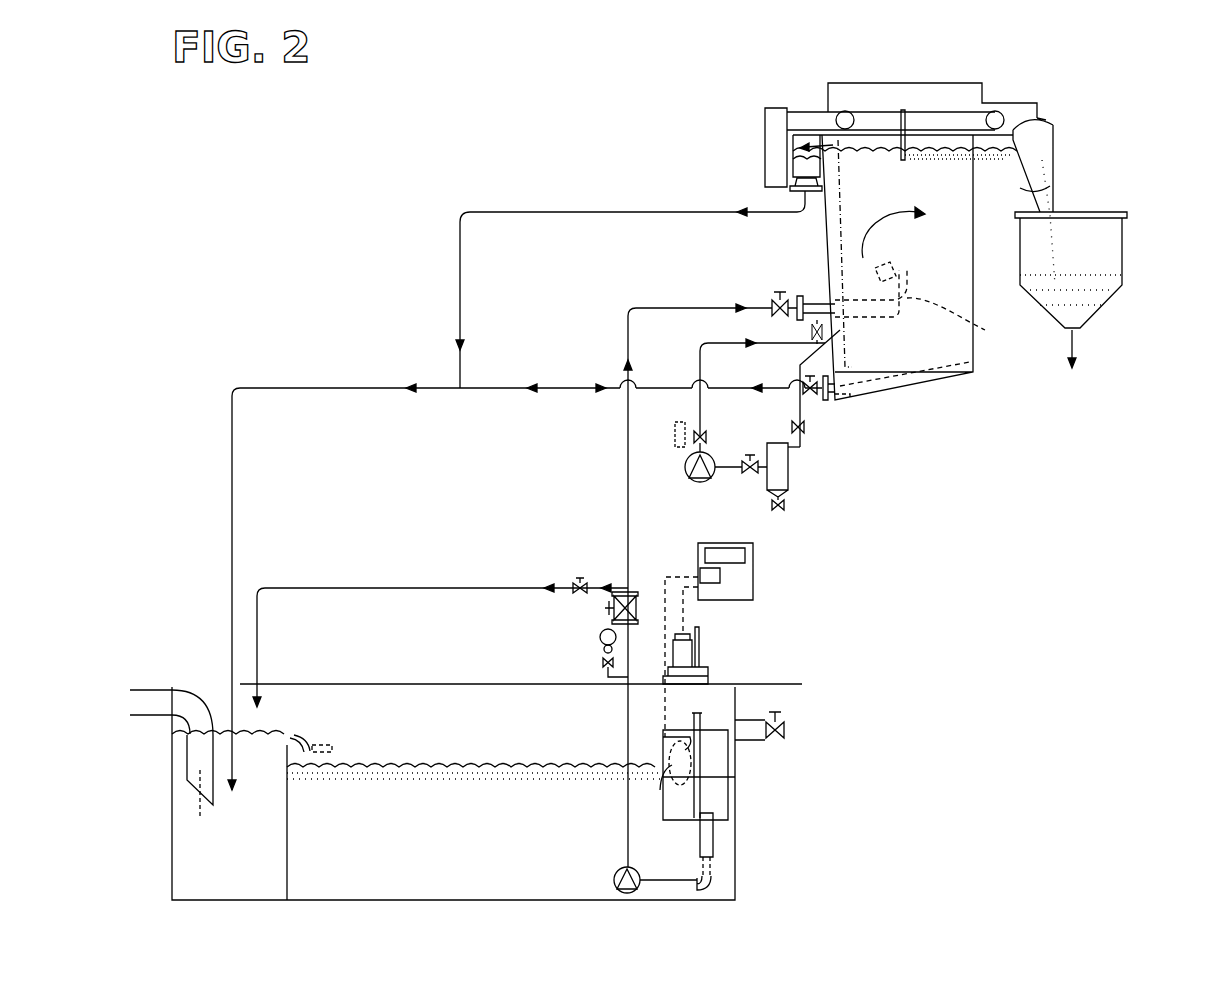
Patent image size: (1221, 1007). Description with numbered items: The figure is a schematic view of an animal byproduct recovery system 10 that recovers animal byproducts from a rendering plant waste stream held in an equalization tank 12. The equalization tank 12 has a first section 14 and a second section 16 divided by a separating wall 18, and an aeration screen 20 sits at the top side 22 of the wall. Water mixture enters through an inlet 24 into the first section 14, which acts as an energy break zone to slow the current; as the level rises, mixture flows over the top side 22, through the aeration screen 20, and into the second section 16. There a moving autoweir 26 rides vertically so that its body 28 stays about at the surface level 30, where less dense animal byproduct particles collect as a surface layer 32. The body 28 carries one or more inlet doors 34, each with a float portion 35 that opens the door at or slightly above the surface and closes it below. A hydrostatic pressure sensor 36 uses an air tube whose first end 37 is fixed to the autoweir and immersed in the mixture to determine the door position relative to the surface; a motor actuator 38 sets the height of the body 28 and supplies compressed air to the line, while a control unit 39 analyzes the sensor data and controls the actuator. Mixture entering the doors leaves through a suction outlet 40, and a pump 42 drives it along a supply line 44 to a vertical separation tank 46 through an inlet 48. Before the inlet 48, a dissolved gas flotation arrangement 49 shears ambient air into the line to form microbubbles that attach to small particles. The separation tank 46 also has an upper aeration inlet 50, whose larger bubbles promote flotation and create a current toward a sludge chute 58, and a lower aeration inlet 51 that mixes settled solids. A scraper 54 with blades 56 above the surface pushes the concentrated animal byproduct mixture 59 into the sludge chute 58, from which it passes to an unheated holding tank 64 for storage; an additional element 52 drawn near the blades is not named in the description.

The animal byproduct recovery system 10 is at (1044, 654).
The equalization tank 12 is at (722, 902).
The first section 14 is at (257, 820).
The second section 16 is at (364, 837).
The separating wall 18 is at (289, 843).
The aeration screen 20 is at (327, 746).
The top side of the separation wall 22 is at (283, 732).
The inlet 24 is at (147, 716).
The moving autoweir 26 is at (728, 795).
The body 28 is at (740, 777).
The surface level 30 is at (555, 762).
The surface layer 32 is at (433, 765).
The inlet doors 34 is at (705, 750).
The float portion 35 is at (681, 772).
The hydrostatic pressure sensor 36 is at (708, 585).
The first end of the air tube 37 is at (660, 786).
The motor actuator 38 is at (714, 655).
The control unit 39 is at (755, 575).
The suction outlet 40 is at (713, 815).
The pump 42 is at (637, 893).
The supply line 44 is at (627, 480).
The vertical separation tank 46 is at (985, 389).
The inlet 48 is at (985, 330).
The dissolved gas flotation arrangement 49 is at (836, 500).
The upper aeration inlet 50 is at (878, 283).
The lower aeration inlet 51 is at (842, 402).
The screen 52 is at (945, 160).
The scraper 54 is at (945, 107).
The blades 56 is at (903, 112).
The sludge chute 58 is at (1055, 146).
The concentrated animal byproduct mixture 59 is at (1040, 190).
The holding tank 64 is at (1126, 242).